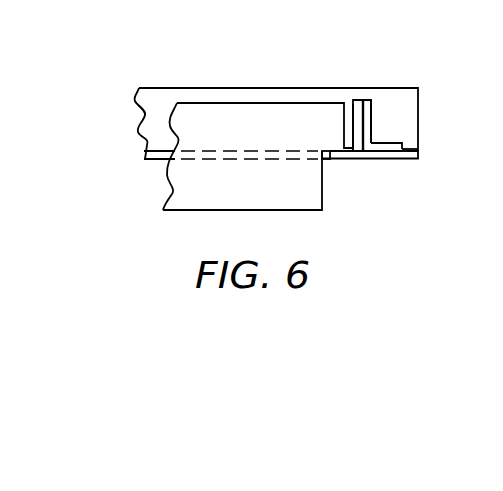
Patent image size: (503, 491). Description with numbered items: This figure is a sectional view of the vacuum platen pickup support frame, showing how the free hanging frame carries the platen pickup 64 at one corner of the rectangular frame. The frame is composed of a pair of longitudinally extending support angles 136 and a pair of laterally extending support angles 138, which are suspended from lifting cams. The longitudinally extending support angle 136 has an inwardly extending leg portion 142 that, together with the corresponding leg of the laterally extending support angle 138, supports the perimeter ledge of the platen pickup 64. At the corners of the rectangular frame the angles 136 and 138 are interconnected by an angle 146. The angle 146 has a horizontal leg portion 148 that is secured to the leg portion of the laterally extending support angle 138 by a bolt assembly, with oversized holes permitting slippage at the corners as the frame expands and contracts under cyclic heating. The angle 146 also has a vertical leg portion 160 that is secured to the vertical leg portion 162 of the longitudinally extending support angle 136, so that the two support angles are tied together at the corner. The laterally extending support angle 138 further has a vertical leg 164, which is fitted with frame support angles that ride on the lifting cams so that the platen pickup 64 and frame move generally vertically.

The laterally extending support angle 138 is at (219, 88).
The platen pickup 64 is at (165, 179).
The inwardly extending leg portion 142 is at (345, 160).
The longitudinally extending support angle 136 is at (358, 99).
The vertical leg portion 160 is at (384, 100).
The angle 146 is at (374, 128).
The horizontal leg portion 148 is at (402, 147).
The vertical leg portion 162 is at (353, 117).
The vertical leg 164 is at (139, 111).